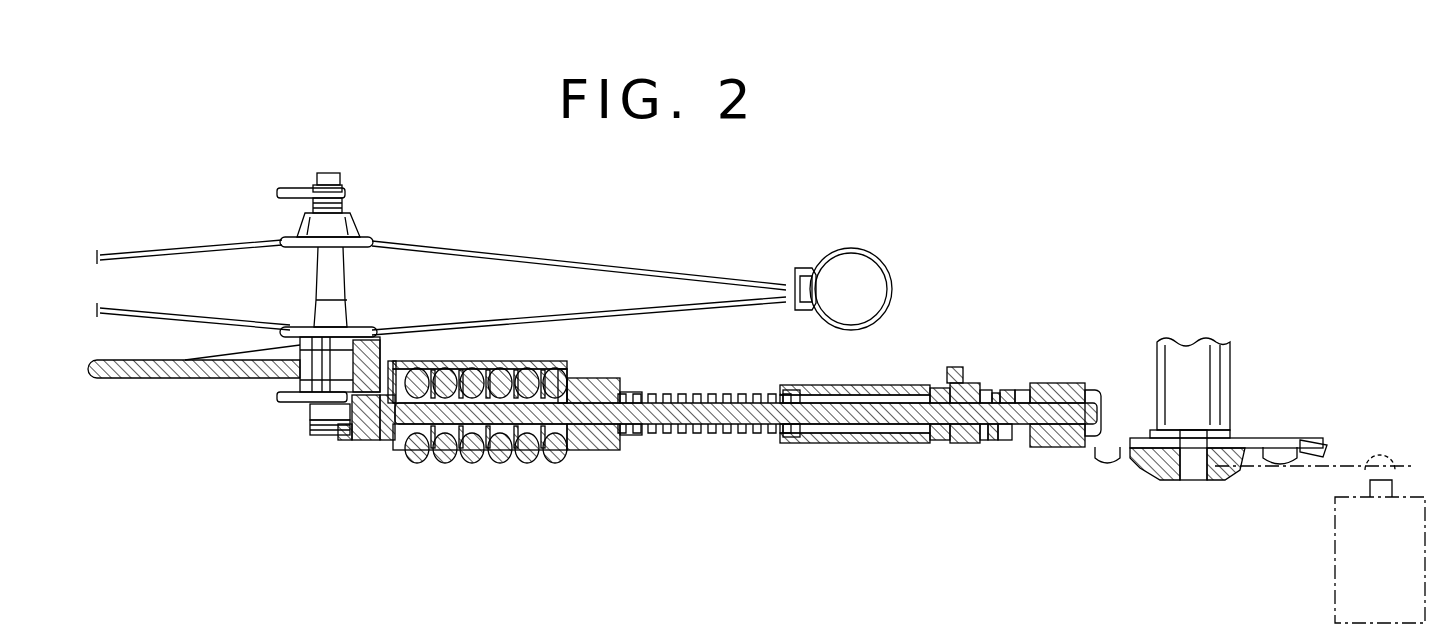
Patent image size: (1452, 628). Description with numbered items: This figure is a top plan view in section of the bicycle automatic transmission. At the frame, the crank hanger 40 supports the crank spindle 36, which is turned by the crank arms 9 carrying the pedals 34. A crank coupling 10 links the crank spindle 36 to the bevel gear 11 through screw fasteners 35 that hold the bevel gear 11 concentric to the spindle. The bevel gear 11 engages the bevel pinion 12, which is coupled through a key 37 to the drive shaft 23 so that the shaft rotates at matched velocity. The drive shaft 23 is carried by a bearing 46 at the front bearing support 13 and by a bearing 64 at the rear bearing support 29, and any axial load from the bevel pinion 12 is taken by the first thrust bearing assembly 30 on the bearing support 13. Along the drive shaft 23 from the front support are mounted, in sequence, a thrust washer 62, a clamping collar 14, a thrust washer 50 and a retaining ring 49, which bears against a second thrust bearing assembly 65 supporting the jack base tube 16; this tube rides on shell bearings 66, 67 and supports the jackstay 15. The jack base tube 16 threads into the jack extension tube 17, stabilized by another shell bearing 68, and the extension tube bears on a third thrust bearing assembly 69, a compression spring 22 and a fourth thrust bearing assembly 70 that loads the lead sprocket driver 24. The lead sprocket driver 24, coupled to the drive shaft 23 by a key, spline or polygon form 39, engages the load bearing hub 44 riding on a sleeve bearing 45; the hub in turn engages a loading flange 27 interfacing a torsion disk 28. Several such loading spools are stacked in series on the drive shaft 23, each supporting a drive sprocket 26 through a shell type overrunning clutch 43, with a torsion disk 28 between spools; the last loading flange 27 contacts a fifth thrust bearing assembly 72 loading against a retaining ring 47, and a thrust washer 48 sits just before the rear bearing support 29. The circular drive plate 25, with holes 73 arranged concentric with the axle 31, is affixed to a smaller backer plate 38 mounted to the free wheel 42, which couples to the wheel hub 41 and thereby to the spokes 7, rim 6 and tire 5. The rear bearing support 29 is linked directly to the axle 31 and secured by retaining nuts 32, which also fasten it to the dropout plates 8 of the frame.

The tire 5 is at (878, 258).
The rim 6 is at (796, 270).
The spokes 7 is at (602, 263).
The dropout plates 8 is at (292, 193).
The crank arms 9 is at (1350, 472).
The crank coupling 10 is at (1228, 480).
The bevel gear 11 is at (1315, 402).
The bevel pinion 12 is at (1088, 396).
The front bearing support 13 is at (1023, 396).
The clamping collar 14 is at (982, 392).
The jackstay 15 is at (960, 372).
The jack base tube 16 is at (945, 444).
The jack extension tube 17 is at (818, 444).
The compression spring 22 is at (700, 396).
The drive shaft 23 is at (723, 424).
The lead sprocket driver 24 is at (590, 378).
The drive plate 25 is at (540, 364).
The drive sprocket 26 is at (503, 465).
The loading flange 27 is at (520, 465).
The torsion disk 28 is at (545, 465).
The rear bearing support 29 is at (345, 440).
The first thrust bearing assembly 30 is at (1025, 447).
The axle 31 is at (328, 440).
The retaining nuts 32 is at (345, 205).
The pedals 34 is at (1343, 575).
The screw fasteners 35 is at (1107, 462).
The crank spindle 36 is at (1193, 480).
The key 37 is at (1055, 392).
The backer plate 38 is at (445, 359).
The key, spline or polygon form 39 is at (620, 384).
The crank hanger 40 is at (1225, 362).
The wheel hub 41 is at (332, 276).
The free wheel 42 is at (298, 349).
The shell type overrunning clutch 43 is at (430, 465).
The load bearing hub 44 is at (455, 465).
The sleeve bearing 45 is at (433, 368).
The bearing 46 is at (1007, 392).
The retaining ring 47 is at (410, 364).
The thrust washer 48 is at (393, 360).
The retaining ring 49 is at (977, 396).
The thrust washer 50 is at (992, 440).
The thrust washer 62 is at (1002, 440).
The bearing 64 is at (366, 432).
The second thrust bearing assembly 65 is at (983, 440).
The shell bearing 66 is at (943, 390).
The shell bearing 67 is at (830, 392).
The shell bearing 68 is at (788, 390).
The third thrust bearing assembly 69 is at (782, 437).
The fourth thrust bearing assembly 70 is at (630, 442).
The fifth thrust bearing assembly 72 is at (390, 440).
The holes 73 is at (160, 380).